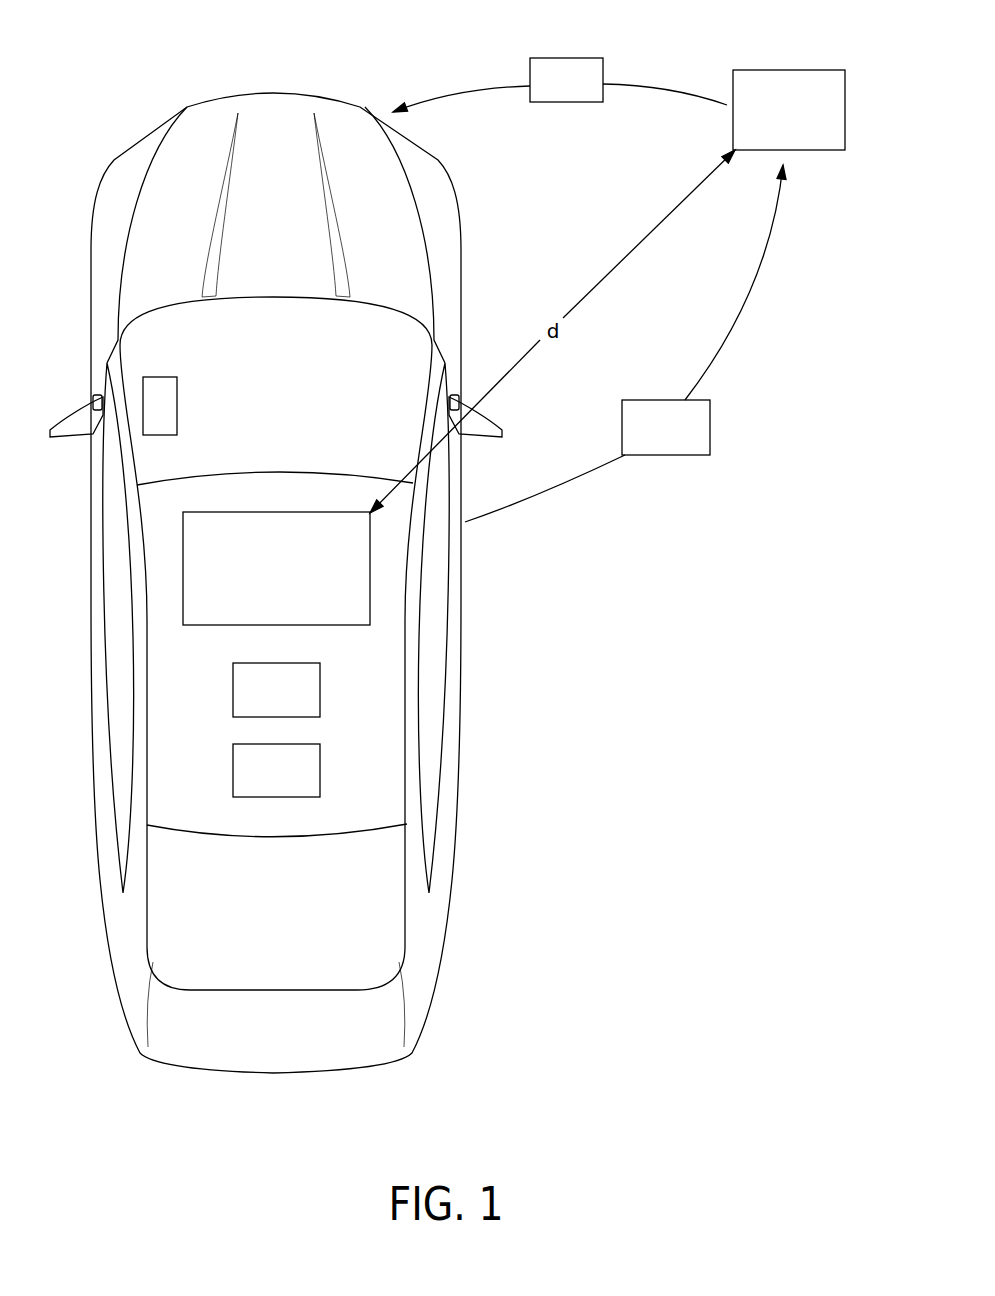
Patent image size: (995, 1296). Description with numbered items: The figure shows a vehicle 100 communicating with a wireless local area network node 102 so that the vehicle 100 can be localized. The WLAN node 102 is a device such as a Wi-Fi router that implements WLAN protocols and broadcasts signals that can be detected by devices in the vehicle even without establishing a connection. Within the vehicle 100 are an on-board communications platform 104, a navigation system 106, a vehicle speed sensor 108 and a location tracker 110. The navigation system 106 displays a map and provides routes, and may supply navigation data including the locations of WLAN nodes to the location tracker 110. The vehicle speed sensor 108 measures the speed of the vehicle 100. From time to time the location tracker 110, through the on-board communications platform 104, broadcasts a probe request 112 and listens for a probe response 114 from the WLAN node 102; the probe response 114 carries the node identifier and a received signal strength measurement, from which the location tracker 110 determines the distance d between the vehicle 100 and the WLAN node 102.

The vehicle 100 is at (157, 125).
The wireless local area network node 102 is at (787, 70).
The on-board communications platform 104 is at (343, 627).
The navigation system 106 is at (258, 705).
The vehicle speed sensor 108 is at (177, 410).
The location tracker 110 is at (258, 784).
The probe request 112 is at (647, 441).
The probe response 114 is at (548, 93).